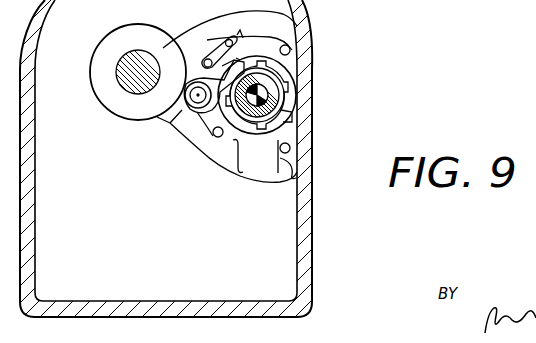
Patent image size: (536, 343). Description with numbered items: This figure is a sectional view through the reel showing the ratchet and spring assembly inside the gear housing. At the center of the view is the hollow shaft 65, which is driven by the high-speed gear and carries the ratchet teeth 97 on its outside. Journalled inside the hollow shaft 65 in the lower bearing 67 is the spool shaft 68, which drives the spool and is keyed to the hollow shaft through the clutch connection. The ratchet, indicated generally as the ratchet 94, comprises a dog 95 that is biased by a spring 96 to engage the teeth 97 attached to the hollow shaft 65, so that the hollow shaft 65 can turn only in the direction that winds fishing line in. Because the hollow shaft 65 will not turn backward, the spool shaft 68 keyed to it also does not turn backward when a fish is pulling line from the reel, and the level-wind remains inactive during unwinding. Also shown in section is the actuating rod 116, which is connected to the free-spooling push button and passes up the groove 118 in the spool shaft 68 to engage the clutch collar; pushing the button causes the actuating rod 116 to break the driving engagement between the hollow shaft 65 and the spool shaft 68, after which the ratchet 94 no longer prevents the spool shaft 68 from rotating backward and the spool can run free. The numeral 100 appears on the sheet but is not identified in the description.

The ratchet 94 is at (181, 122).
The dog 95 is at (214, 92).
The spring 96 is at (224, 42).
The lower bearing 67 is at (268, 82).
The spool shaft 68 is at (270, 89).
The actuating rod 116 is at (265, 94).
The hollow shaft 65 is at (290, 119).
The teeth 97 is at (284, 129).
The groove 118 is at (252, 134).
The assembly 100 is at (424, 4).